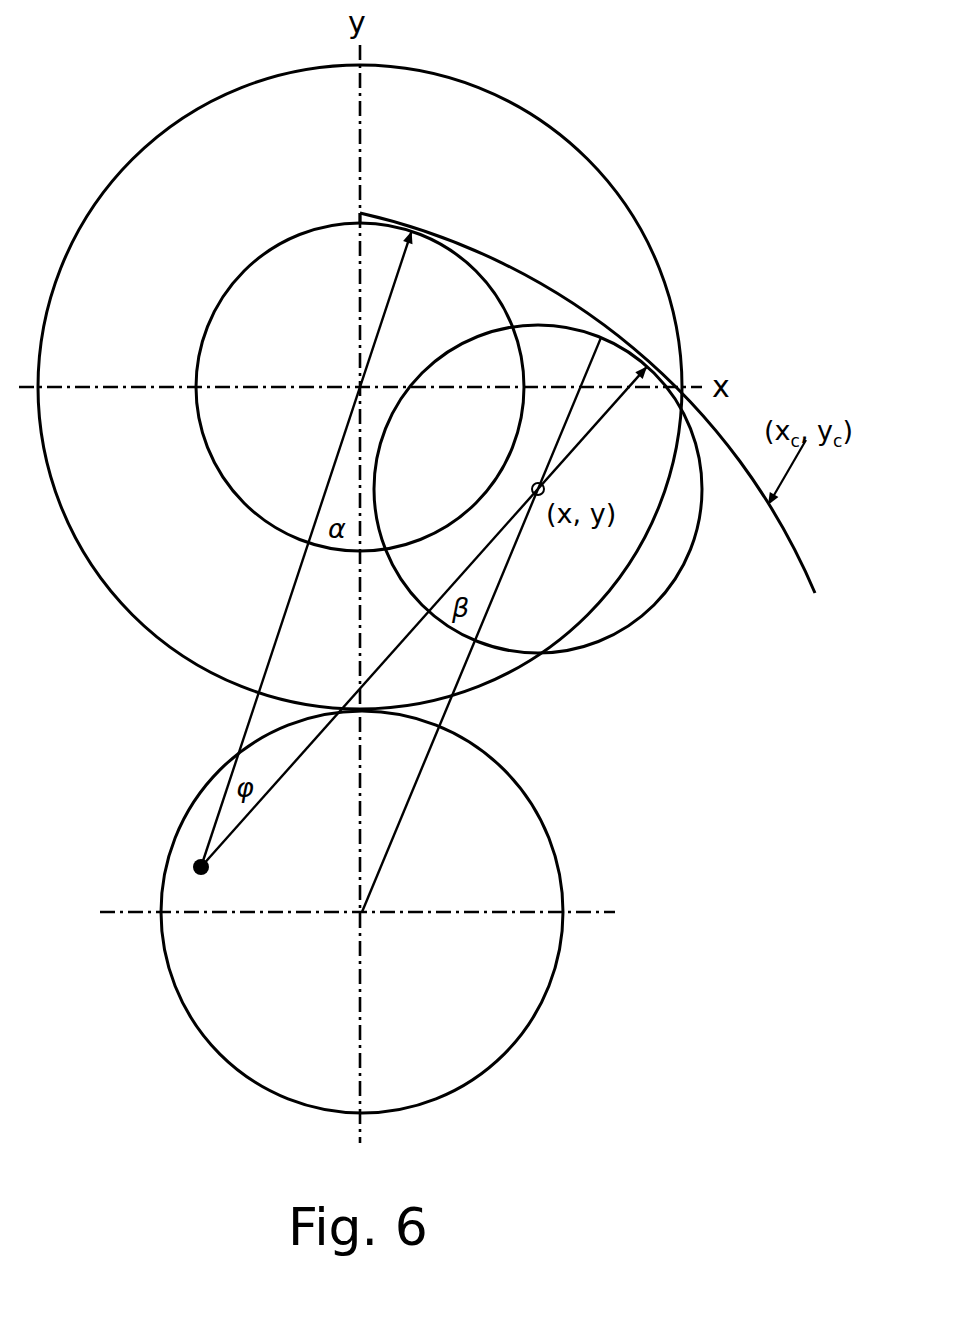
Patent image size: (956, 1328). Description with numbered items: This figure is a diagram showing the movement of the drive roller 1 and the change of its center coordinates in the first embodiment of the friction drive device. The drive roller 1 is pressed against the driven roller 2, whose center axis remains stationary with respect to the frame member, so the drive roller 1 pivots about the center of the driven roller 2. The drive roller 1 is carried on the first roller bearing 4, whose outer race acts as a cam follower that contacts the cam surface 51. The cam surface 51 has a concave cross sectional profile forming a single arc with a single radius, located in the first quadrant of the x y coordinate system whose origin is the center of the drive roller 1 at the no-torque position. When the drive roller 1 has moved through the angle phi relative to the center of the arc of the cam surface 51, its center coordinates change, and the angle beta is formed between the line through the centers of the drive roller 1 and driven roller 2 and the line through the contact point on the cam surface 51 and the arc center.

The drive roller 1 is at (563, 133).
The driven roller 2 is at (533, 805).
The first roller bearing 4 is at (243, 268).
The cam surface 51 is at (810, 578).